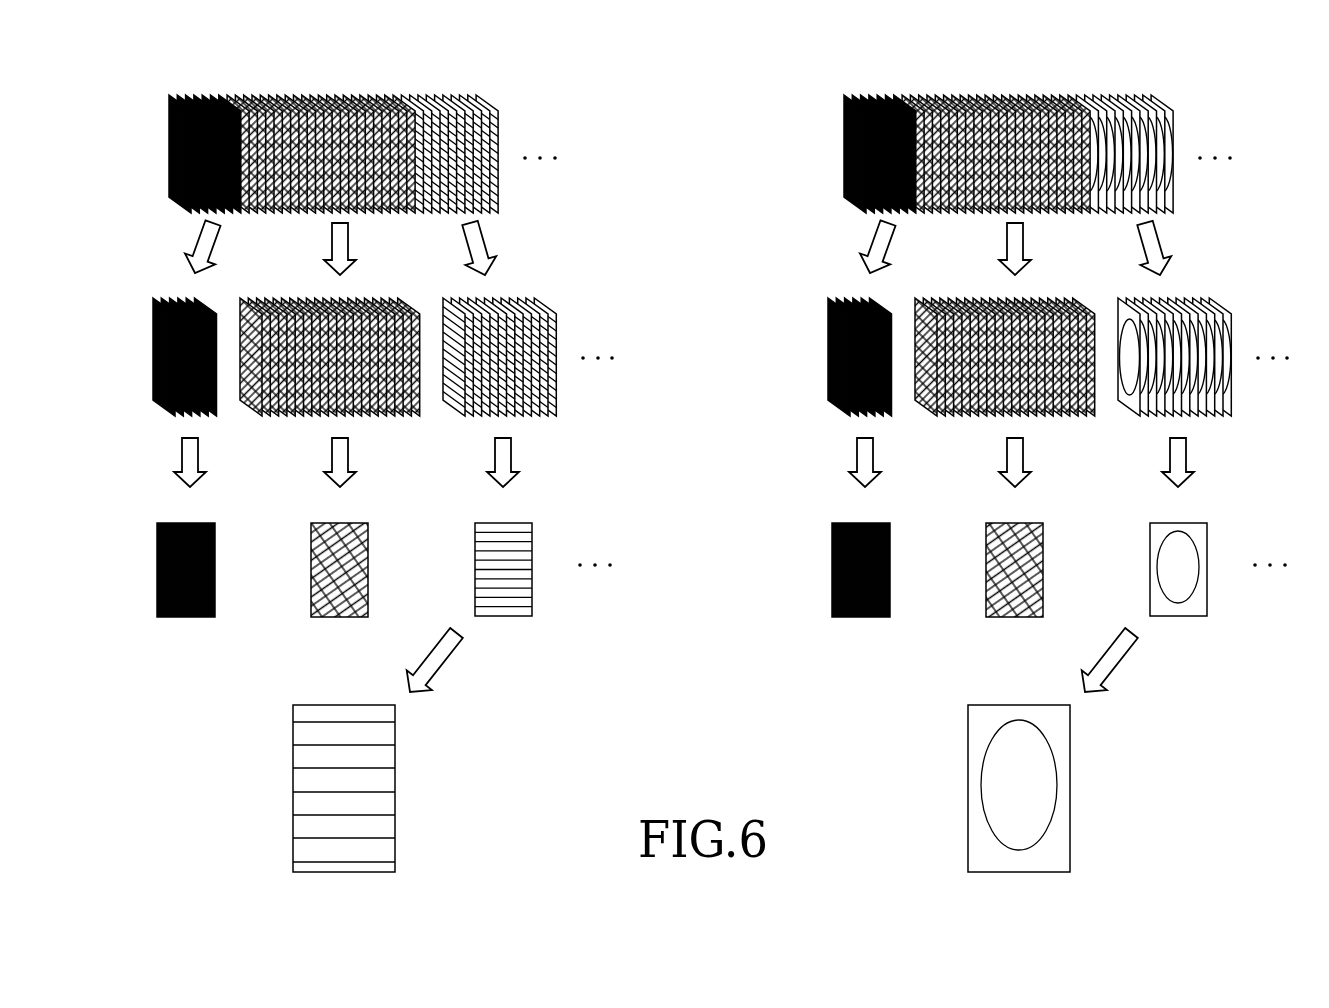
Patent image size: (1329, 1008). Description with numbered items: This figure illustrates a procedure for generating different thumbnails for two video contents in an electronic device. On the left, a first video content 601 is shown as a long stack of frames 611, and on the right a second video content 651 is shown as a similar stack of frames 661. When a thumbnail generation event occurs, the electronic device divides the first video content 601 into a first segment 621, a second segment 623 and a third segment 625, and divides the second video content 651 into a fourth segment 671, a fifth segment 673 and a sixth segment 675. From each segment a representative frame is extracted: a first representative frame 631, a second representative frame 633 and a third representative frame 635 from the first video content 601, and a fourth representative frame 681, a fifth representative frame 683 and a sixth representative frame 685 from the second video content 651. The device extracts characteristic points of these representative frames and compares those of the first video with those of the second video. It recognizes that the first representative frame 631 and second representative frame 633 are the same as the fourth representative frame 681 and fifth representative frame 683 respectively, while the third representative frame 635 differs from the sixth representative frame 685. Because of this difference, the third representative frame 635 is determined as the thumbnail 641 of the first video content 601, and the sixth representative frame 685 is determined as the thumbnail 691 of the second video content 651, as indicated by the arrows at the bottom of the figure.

The first video content 601 is at (452, 58).
The frames of first video content 611 is at (515, 134).
The first segment 621 is at (162, 412).
The second segment 623 is at (254, 412).
The third segment 625 is at (459, 412).
The first representative frame 631 is at (178, 617).
The second representative frame 633 is at (336, 617).
The third representative frame 635 is at (513, 617).
The representative image of first video content 641 is at (395, 755).
The second video content 651 is at (1145, 58).
The frames of second video content 661 is at (1190, 134).
The fourth segment 671 is at (837, 412).
The fifth segment 673 is at (929, 412).
The sixth segment 675 is at (1134, 412).
The fourth representative frame 681 is at (853, 617).
The fifth representative frame 683 is at (1011, 617).
The sixth representative frame 685 is at (1188, 617).
The representative image of second video content 691 is at (1070, 755).